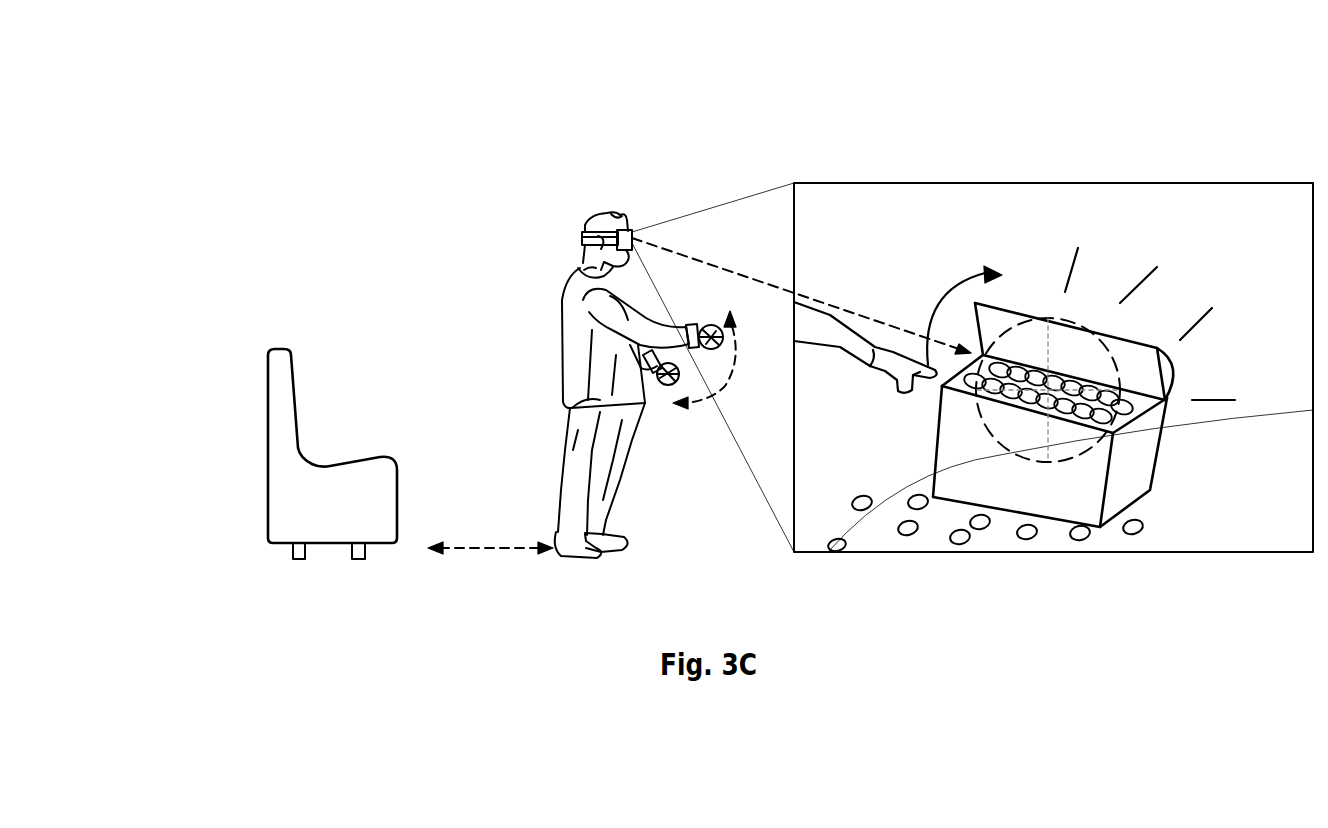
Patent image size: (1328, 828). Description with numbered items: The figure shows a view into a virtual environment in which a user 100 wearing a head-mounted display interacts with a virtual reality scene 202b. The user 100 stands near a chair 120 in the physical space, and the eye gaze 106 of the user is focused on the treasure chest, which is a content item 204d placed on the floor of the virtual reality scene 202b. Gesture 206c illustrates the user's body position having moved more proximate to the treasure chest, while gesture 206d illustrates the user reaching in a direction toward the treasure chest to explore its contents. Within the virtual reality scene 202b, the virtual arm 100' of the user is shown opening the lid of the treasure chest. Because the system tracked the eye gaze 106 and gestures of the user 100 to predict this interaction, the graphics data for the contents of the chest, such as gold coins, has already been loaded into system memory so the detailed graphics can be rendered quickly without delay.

The user 100 is at (615, 385).
The virtual arm 100' is at (865, 352).
The eye gaze 106 is at (693, 258).
The chair (physical object) 120 is at (246, 541).
The virtual reality scene 202b is at (1300, 534).
The content item 204d is at (1028, 320).
The gesture 206c is at (475, 548).
The gesture 206d is at (723, 385).